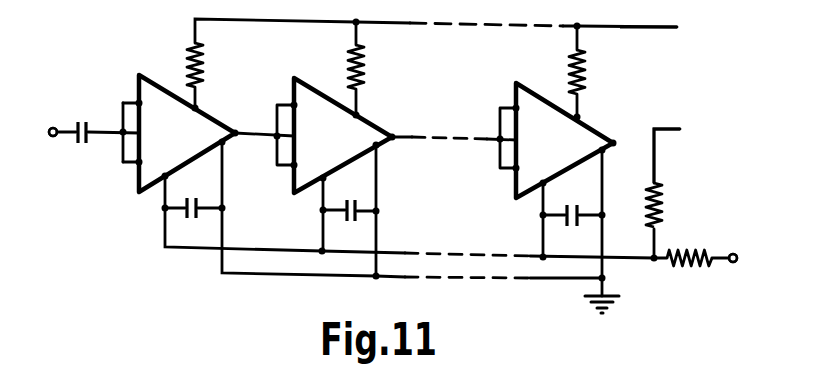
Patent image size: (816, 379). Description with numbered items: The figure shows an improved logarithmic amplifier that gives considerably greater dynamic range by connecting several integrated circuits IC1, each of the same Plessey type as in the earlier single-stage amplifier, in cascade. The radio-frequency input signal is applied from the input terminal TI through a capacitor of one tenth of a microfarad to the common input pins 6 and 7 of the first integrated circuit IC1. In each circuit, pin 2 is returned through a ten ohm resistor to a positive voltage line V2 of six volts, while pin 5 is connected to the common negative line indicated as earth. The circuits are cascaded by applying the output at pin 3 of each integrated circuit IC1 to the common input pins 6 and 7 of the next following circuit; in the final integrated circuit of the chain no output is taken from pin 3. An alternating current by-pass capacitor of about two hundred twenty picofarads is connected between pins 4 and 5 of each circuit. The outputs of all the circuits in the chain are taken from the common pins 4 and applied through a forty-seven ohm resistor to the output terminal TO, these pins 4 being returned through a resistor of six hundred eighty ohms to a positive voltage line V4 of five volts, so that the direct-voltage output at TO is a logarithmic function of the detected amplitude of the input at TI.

The integrated circuit IC1 is at (168, 118).
The pin 2 is at (202, 100).
The pin 3 is at (239, 124).
The pin 4 is at (166, 164).
The pin 5 is at (228, 148).
The pin 6 is at (146, 158).
The pin 7 is at (146, 101).
The input terminal TI is at (56, 150).
The output terminal TO is at (731, 243).
The positive voltage line V2 is at (664, 27).
The positive voltage line V4 is at (668, 142).